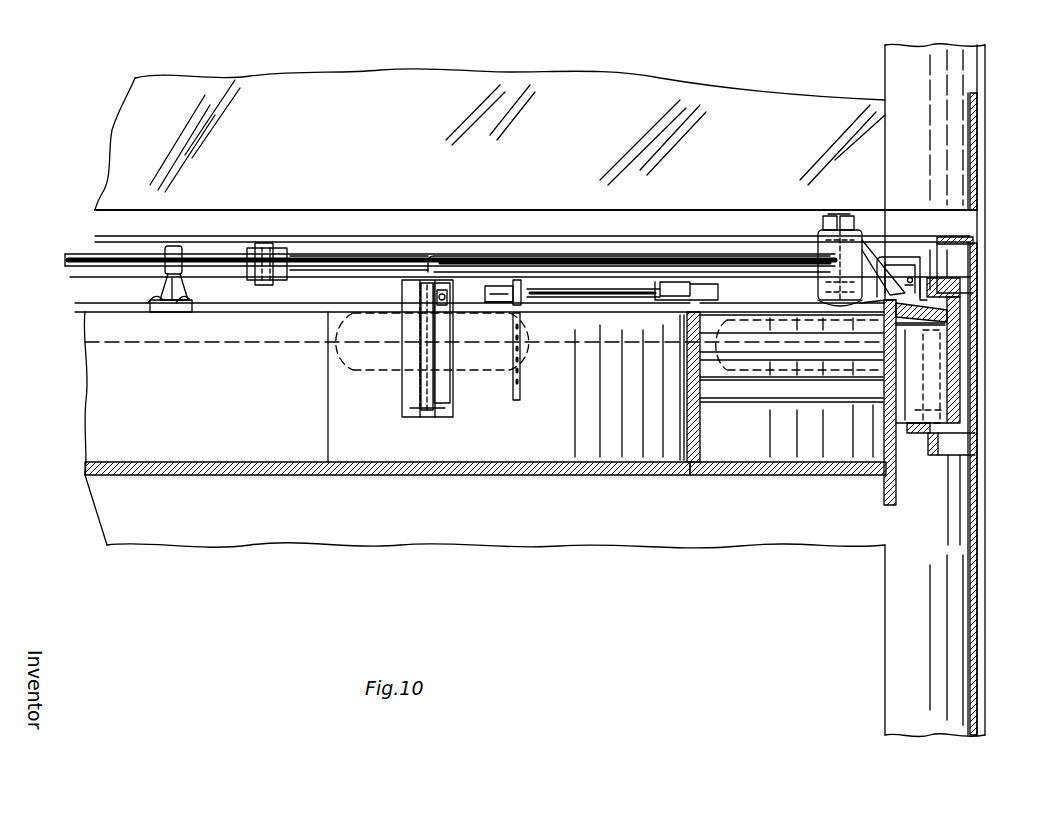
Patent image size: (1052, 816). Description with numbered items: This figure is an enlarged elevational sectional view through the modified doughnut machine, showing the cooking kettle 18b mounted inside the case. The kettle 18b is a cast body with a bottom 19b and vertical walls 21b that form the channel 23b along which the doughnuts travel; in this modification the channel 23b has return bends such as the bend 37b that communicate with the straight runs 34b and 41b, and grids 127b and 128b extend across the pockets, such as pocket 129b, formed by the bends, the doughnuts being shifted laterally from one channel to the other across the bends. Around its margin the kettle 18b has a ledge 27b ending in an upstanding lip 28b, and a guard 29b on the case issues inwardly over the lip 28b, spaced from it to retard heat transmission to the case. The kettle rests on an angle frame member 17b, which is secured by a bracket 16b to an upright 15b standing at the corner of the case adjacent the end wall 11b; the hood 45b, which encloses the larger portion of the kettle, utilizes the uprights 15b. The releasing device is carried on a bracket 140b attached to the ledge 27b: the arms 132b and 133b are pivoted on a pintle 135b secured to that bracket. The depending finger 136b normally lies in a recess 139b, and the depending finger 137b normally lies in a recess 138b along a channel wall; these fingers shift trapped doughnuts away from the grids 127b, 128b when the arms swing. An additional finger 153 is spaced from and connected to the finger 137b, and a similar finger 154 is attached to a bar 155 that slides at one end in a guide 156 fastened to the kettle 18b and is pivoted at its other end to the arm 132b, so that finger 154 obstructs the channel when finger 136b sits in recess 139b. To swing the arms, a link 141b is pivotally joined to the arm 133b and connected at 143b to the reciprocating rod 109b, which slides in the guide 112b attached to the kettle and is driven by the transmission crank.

The hood 45b is at (140, 110).
The reciprocating rod 109b is at (77, 257).
The guide 112b is at (172, 246).
The link connection 143b is at (262, 243).
The link 141b is at (352, 263).
The guide 156 is at (517, 280).
The bar 155 is at (567, 290).
The arm 133b is at (675, 262).
The finger 154 is at (680, 287).
The bracket 140b is at (818, 235).
The pintle 135b is at (838, 216).
The arm 132b is at (893, 263).
The upright 15b is at (975, 133).
The end wall 11b is at (980, 488).
The guard 29b is at (953, 240).
The lip 28b is at (962, 280).
The ledge 27b is at (950, 312).
The angle frame member 17b is at (918, 433).
The vertical wall 21b is at (893, 380).
The depending finger 136b is at (935, 350).
The recess 139b is at (973, 424).
The bracket 16b is at (952, 443).
The channel 23b is at (115, 418).
The straight run 41b is at (215, 443).
The cooking kettle 18b is at (107, 477).
The bottom 19b is at (797, 470).
The depending finger 137b is at (445, 400).
The finger 153 is at (418, 385).
The recess 138b is at (442, 380).
The grid 128b is at (516, 402).
The pocket 129b is at (588, 440).
The return bend 37b is at (657, 423).
The grid 127b is at (738, 398).
The straight run 34b is at (752, 453).